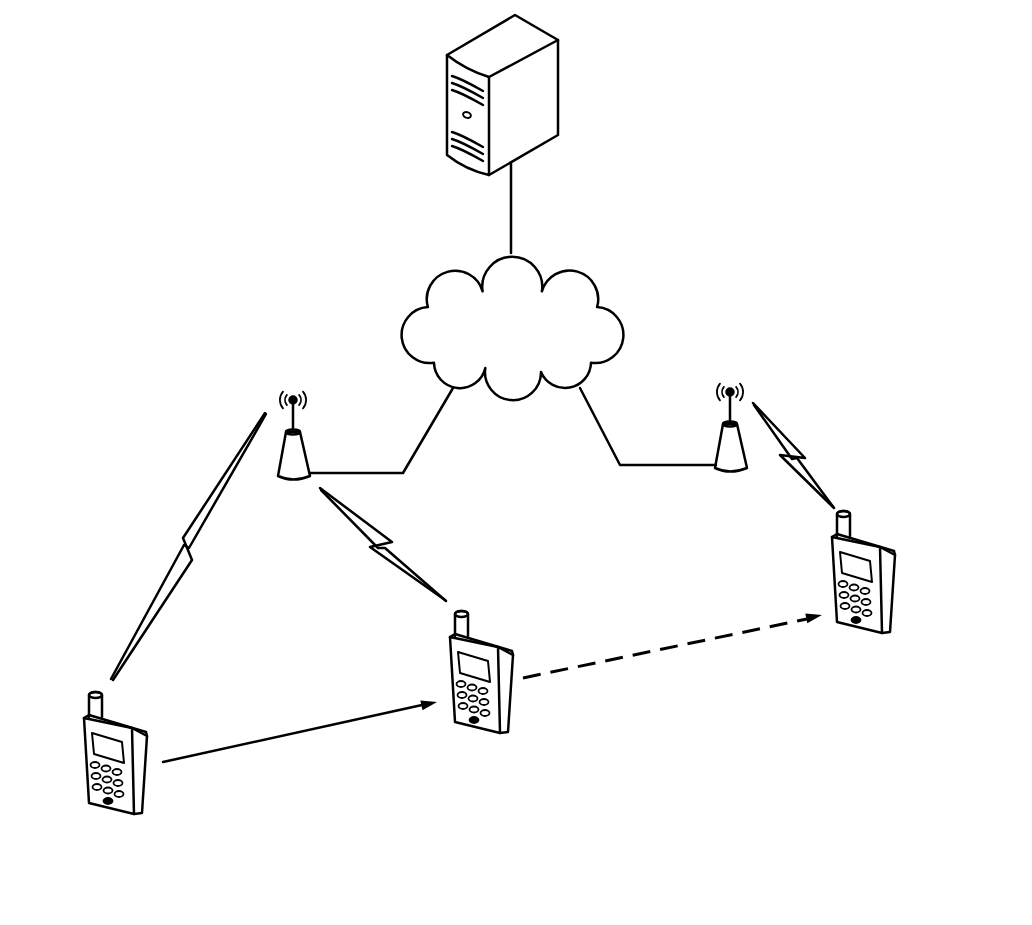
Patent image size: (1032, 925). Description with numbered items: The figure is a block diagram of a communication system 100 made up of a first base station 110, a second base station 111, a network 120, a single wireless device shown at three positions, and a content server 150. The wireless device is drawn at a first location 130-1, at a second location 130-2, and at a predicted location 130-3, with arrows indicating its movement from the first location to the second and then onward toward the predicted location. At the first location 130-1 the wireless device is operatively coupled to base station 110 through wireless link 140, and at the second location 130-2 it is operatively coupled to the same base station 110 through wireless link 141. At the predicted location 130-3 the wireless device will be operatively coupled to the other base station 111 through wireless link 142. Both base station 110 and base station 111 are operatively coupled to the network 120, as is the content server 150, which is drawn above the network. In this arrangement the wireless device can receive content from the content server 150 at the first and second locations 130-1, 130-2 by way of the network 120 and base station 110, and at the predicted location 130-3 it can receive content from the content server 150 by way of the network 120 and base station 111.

The communication system 100 is at (918, 35).
The base station 110 is at (292, 482).
The base station 111 is at (729, 474).
The network 120 is at (493, 346).
The wireless device at first location 130-1 is at (124, 816).
The wireless device at second location 130-2 is at (490, 735).
The wireless device at predicted location 130-3 is at (879, 636).
The wireless link 140 is at (184, 537).
The wireless link 141 is at (391, 541).
The wireless link 142 is at (802, 455).
The content server 150 is at (482, 178).